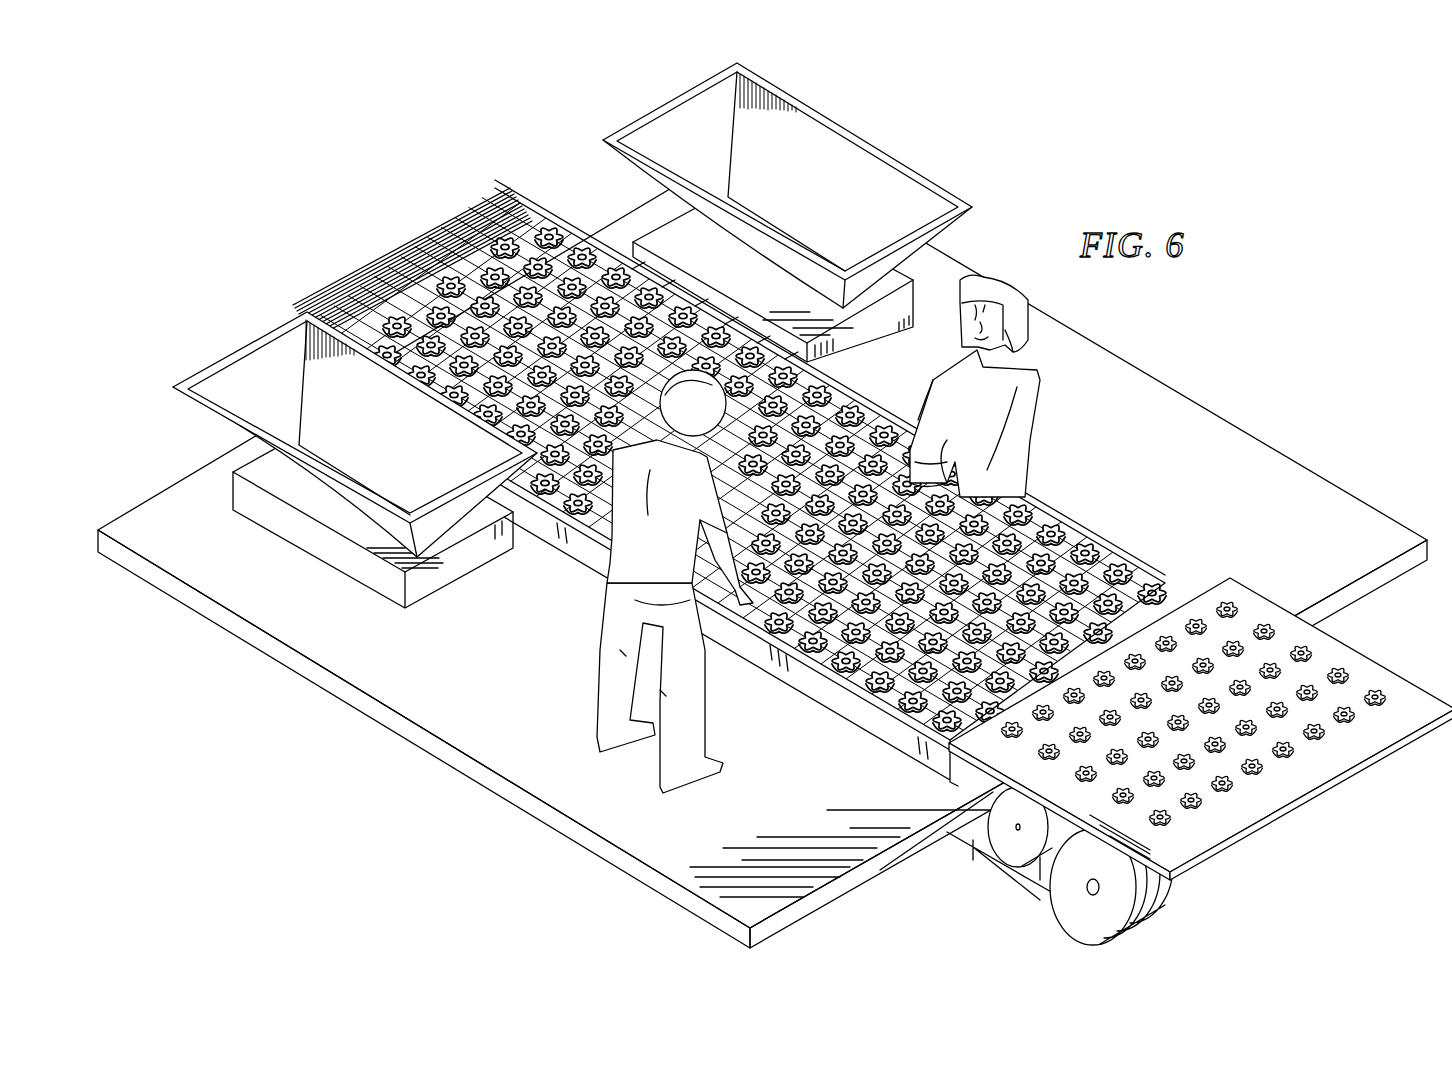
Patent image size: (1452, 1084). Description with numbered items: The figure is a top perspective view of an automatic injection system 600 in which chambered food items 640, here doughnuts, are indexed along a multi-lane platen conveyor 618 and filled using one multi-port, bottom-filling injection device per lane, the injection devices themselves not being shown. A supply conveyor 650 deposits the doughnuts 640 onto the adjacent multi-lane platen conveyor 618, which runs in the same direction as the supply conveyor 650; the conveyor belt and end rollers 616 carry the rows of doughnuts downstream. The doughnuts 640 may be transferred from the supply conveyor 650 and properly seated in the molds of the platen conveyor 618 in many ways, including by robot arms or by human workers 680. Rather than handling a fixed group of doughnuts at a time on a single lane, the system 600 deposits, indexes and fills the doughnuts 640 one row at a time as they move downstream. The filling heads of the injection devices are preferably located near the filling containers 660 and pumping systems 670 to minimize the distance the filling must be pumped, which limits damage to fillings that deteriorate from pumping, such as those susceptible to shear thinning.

The automatic injection system 600 is at (1207, 334).
The conveyor belt 616 is at (510, 198).
The multi-lane platen conveyor 618 is at (1170, 588).
The chambered food items 640 is at (1252, 790).
The supply conveyor 650 is at (1378, 678).
The filling containers 660 is at (224, 377).
The pumping systems 670 is at (295, 542).
The human workers 680 is at (1040, 387).